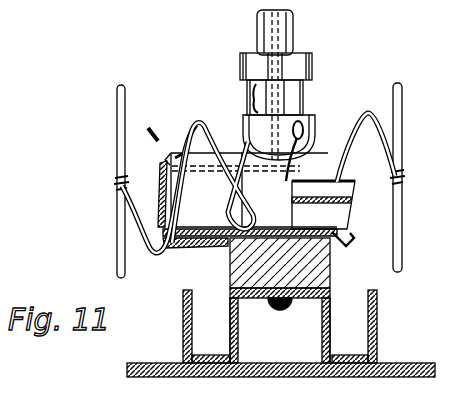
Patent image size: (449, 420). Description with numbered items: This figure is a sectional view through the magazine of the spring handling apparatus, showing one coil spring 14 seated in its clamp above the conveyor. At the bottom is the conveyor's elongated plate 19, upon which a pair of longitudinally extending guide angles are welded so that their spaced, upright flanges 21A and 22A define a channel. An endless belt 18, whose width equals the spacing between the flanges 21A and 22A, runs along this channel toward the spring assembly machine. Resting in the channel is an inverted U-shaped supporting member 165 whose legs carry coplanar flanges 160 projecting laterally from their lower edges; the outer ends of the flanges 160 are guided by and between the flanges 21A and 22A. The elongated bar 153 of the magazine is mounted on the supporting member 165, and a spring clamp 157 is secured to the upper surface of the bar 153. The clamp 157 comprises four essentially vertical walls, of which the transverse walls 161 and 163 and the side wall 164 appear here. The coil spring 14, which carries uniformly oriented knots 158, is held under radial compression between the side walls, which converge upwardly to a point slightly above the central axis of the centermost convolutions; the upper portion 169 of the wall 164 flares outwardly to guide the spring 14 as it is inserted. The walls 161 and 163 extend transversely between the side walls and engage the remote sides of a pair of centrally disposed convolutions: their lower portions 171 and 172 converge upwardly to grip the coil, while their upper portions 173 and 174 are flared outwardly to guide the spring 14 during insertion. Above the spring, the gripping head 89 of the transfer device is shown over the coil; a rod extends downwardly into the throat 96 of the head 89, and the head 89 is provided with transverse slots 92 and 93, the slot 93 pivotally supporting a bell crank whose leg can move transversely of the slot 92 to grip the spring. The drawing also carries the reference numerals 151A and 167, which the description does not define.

The coil spring 14 is at (117, 213).
The endless belt 18 is at (265, 366).
The elongated plate 19 is at (405, 378).
The upright flange 21A is at (185, 312).
The upright flange 22A is at (378, 308).
The gripping head 89 is at (222, 99).
The transverse slot 92 is at (302, 130).
The transverse slot 93 is at (226, 98).
The throat 96 is at (297, 88).
The housing wall 151A is at (226, 289).
The elongated bar 153 is at (226, 258).
The spring clamp 157 is at (148, 128).
The knots 158 is at (116, 178).
The coplanar flanges 160 is at (212, 361).
The wall 161 is at (352, 209).
The wall 163 is at (170, 165).
The wall 164 is at (229, 130).
The inverted U-shaped supporting member 165 is at (330, 288).
The bracket plate 167 is at (235, 199).
The upper portion of wall 169 is at (229, 181).
The lower portion of wall 171 is at (342, 226).
The lower portion of wall 172 is at (167, 190).
The upper portion of wall 173 is at (358, 178).
The upper portion of wall 174 is at (177, 117).